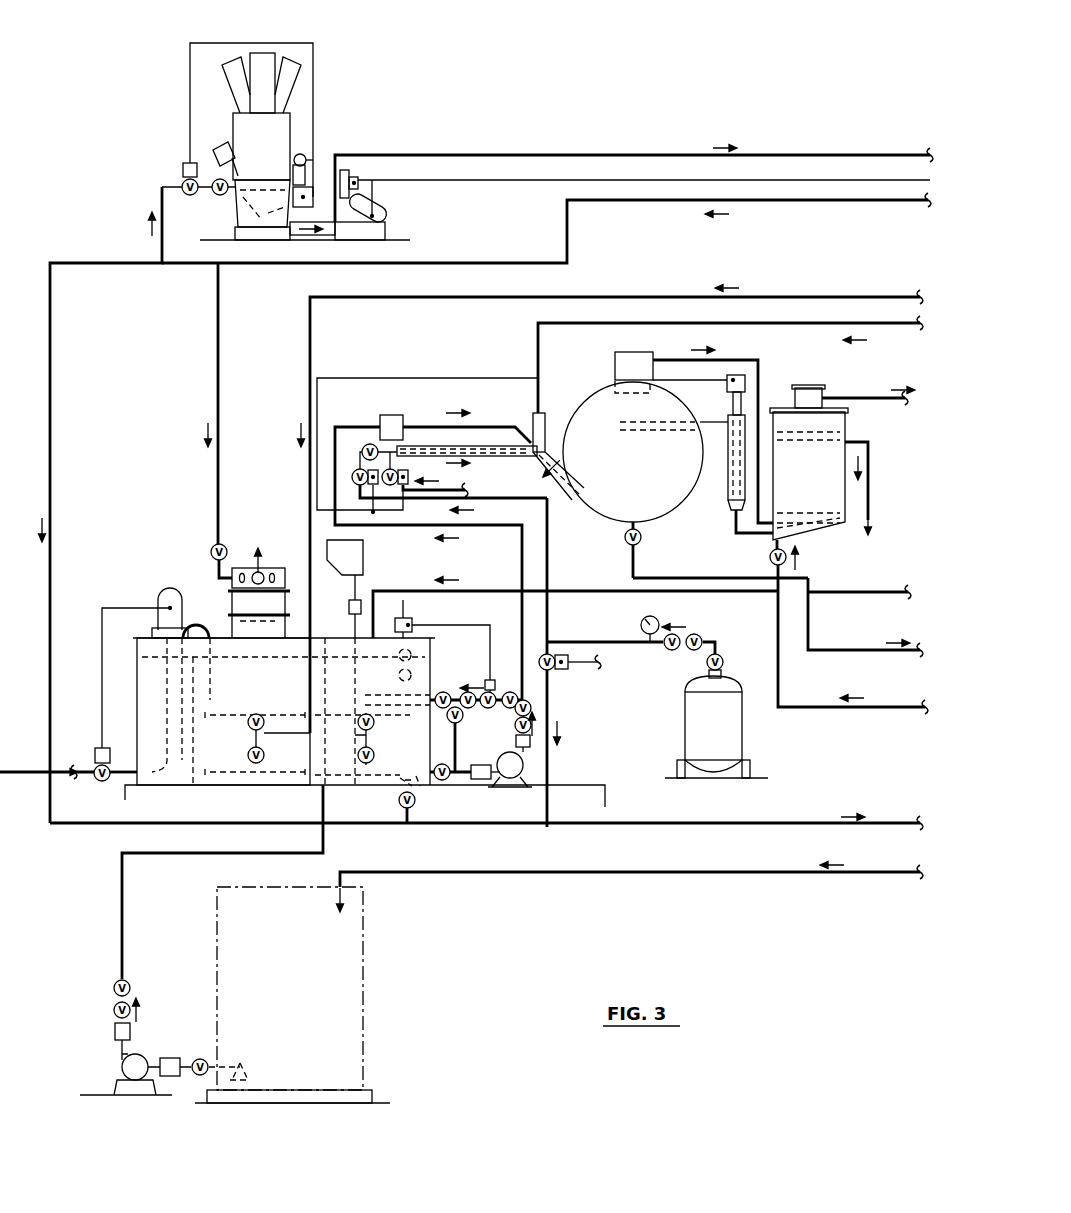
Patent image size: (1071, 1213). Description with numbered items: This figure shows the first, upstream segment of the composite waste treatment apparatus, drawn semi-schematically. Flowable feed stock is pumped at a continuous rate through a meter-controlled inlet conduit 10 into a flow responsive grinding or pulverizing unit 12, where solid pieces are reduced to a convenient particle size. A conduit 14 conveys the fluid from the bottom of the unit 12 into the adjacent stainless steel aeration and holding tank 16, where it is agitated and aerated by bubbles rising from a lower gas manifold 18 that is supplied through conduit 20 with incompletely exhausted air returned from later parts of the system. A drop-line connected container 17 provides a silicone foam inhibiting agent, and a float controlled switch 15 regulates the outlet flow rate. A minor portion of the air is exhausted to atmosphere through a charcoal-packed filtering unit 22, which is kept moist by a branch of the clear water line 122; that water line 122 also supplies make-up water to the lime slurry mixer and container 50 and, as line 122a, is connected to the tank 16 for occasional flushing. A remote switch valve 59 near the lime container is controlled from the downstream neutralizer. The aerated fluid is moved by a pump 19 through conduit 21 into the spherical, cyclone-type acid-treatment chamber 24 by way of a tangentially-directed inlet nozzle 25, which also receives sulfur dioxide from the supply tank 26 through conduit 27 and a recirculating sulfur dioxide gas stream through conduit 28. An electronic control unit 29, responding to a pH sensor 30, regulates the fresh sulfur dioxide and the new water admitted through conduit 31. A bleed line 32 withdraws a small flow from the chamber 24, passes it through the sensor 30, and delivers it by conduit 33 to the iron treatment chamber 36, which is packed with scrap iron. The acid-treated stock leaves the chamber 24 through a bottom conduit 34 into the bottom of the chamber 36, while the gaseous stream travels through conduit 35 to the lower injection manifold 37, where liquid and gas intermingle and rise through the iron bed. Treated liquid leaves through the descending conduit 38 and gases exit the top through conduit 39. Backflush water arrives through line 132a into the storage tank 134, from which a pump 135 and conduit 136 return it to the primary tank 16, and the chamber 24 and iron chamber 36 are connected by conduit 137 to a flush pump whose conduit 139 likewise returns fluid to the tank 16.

The inlet conduit 10 is at (62, 770).
The grinding or pulverizing unit 12 is at (148, 698).
The conduit 14 is at (204, 620).
The float controlled switch 15 is at (408, 624).
The aeration and holding tank 16 is at (282, 788).
The drop-line connected container 17 is at (347, 565).
The lower gas manifold 18 is at (266, 738).
The pump 19 is at (510, 778).
The conduit 20 is at (310, 350).
The conduit 21 is at (375, 425).
The charcoal-packed filtering unit 22 is at (274, 565).
The acid-treatment chamber 24 is at (633, 479).
The inlet nozzle 25 is at (552, 478).
The sulfur dioxide supply tank 26 is at (653, 697).
The conduit 27 is at (550, 582).
The conduit 28 is at (537, 352).
The electronic control unit 29 is at (745, 382).
The pH sensor 30 is at (732, 466).
The conduit 31 is at (405, 476).
The bleed line 32 is at (713, 426).
The conduit 33 is at (738, 526).
The bottom conduit 34 is at (690, 578).
The conduit 35 is at (683, 358).
The iron treatment chamber 36 is at (847, 546).
The lower injection manifold 37 is at (820, 522).
The descending conduit 38 is at (870, 450).
The conduit 39 is at (855, 398).
The lime slurry mixer and container 50 is at (286, 293).
The remote switch valve 59 is at (376, 212).
The clear water line 122 is at (567, 210).
The flushing line 122a is at (605, 828).
The backflush water line 132a is at (725, 876).
The storage tank 134 is at (365, 960).
The pump 135 is at (135, 1055).
The conduit 136 is at (195, 858).
The conduit 137 is at (808, 637).
The conduit 139 is at (790, 710).